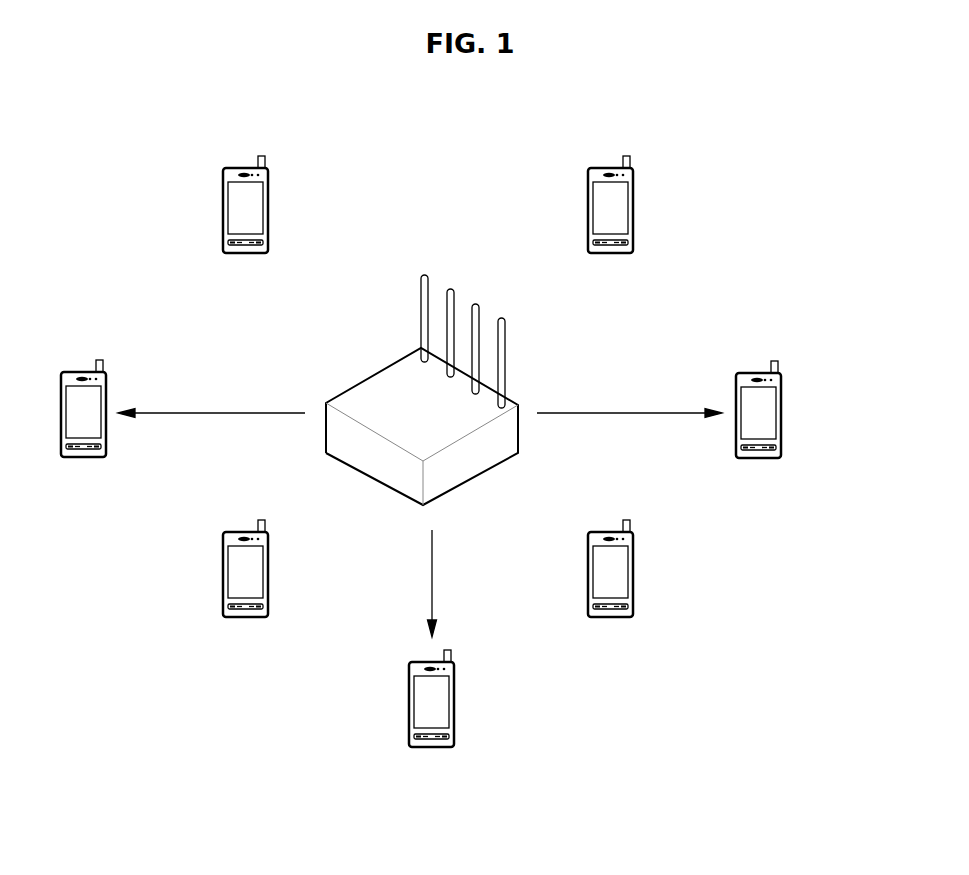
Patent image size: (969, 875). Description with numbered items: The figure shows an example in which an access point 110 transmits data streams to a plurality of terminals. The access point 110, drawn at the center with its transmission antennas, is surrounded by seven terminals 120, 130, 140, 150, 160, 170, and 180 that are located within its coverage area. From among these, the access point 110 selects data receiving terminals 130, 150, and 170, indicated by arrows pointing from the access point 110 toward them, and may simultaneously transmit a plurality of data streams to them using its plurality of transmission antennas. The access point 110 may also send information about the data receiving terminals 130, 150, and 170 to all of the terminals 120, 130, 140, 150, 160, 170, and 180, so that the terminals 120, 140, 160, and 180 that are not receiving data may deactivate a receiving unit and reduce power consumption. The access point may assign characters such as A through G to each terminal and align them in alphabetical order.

The access point 110 is at (498, 444).
The terminal 120 is at (633, 208).
The data receiving terminal 130 is at (781, 409).
The terminal 140 is at (633, 572).
The data receiving terminal 150 is at (454, 700).
The terminal 160 is at (268, 570).
The data receiving terminal 170 is at (106, 379).
The terminal 180 is at (268, 209).